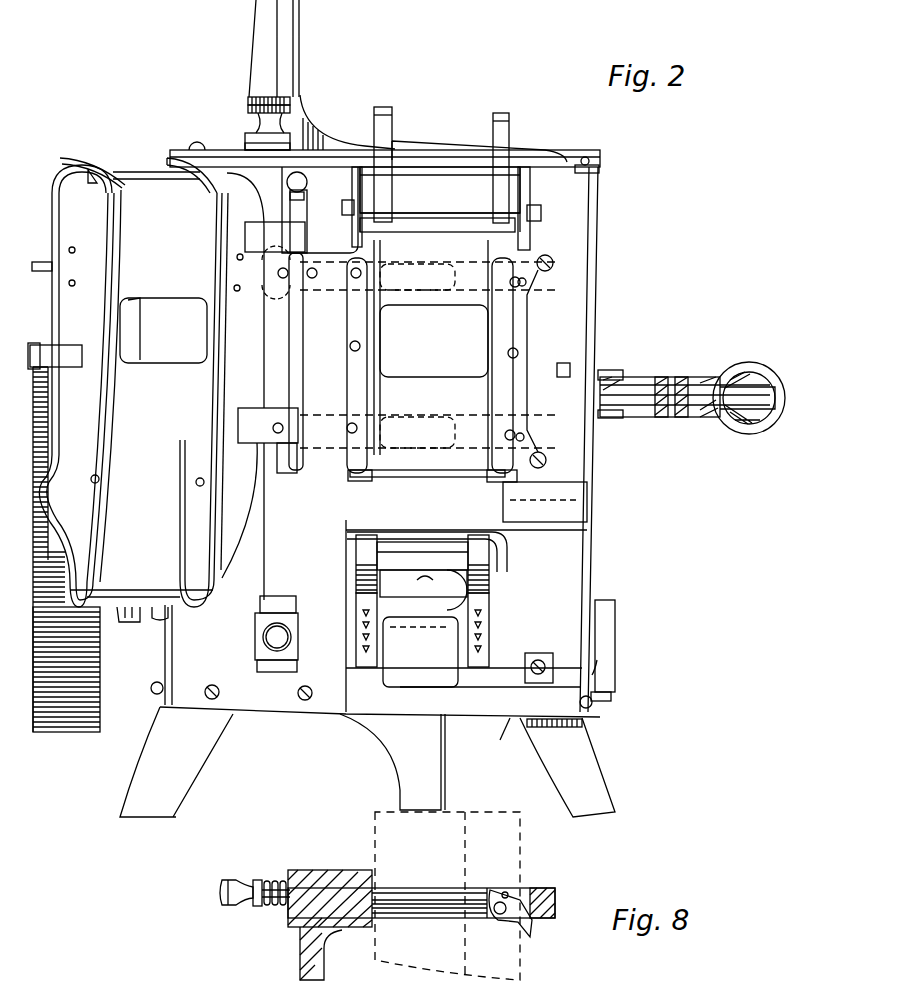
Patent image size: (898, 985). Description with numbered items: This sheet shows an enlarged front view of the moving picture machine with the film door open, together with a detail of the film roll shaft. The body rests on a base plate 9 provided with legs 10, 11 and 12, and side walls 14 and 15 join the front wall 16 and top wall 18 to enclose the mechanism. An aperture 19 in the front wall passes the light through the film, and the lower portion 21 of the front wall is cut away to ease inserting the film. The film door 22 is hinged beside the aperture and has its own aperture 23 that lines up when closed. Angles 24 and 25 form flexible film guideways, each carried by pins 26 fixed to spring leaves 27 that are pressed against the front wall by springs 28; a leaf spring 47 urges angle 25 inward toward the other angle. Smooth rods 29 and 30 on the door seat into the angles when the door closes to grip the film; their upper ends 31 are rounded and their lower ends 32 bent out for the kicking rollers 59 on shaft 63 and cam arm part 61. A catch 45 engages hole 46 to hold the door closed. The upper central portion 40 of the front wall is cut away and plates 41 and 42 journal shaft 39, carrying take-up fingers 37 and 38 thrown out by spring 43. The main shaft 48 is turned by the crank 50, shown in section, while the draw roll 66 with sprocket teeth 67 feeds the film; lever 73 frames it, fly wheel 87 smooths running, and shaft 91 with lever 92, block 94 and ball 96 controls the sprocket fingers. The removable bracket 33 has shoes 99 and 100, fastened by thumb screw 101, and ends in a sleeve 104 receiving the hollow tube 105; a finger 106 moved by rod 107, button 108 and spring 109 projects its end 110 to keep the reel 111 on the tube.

In FIG. 2, the base plate 9 is at (470, 718).
In FIG. 2, the leg 10 is at (200, 790).
In FIG. 2, the leg 11 is at (395, 770).
In FIG. 2, the leg 12 is at (598, 750).
In FIG. 2, the side wall 14 is at (165, 655).
In FIG. 2, the side wall 15 is at (595, 545).
In FIG. 2, the front wall 16 is at (252, 526).
In FIG. 2, the top wall 18 is at (445, 150).
In FIG. 2, the aperture 19 is at (570, 365).
In FIG. 2, the lower portion of the front wall 21 is at (595, 505).
In FIG. 2, the film door 22 is at (138, 200).
In FIG. 2, the aperture 23 is at (160, 355).
In FIG. 2, the angle 24 is at (380, 300).
In FIG. 2, the angle 25 is at (490, 398).
In FIG. 2, the pins 26 is at (528, 284).
In FIG. 2, the spring leaves 27 is at (470, 270).
In FIG. 2, the springs 28 is at (318, 248).
In FIG. 2, the rod 29 is at (213, 443).
In FIG. 2, the rod 30 is at (113, 445).
In FIG. 2, the upper ends of the rods 31 is at (68, 160).
In FIG. 2, the lower ends of the rods 32 is at (190, 562).
In FIG. 2, the bracket 33 is at (292, 47).
In FIG. 2, the finger 37 is at (394, 157).
In FIG. 2, the finger 38 is at (517, 154).
In FIG. 2, the shaft 39 is at (440, 199).
In FIG. 2, the upper central portion of the front wall 40 is at (462, 178).
In FIG. 2, the plate 41 is at (351, 182).
In FIG. 2, the plate 42 is at (530, 190).
In FIG. 2, the spring 43 is at (541, 214).
In FIG. 2, the catch 45 is at (75, 368).
In FIG. 2, the hole 46 is at (650, 375).
In FIG. 2, the leaf spring 47 is at (533, 300).
In FIG. 2, the main shaft 48 is at (678, 375).
In FIG. 2, the crank 50 is at (746, 372).
In FIG. 2, the rollers 59 is at (395, 548).
In FIG. 2, the part of the cam arm 61 is at (420, 532).
In FIG. 2, the shaft 63 is at (495, 612).
In FIG. 2, the film draw roll 66 is at (470, 600).
In FIG. 2, the sprocket teeth 67 is at (492, 640).
In FIG. 2, the lever 73 is at (255, 658).
In FIG. 2, the fly wheel 87 is at (70, 735).
In FIG. 2, the shaft 91 is at (500, 738).
In FIG. 2, the lever 92 is at (615, 627).
In FIG. 2, the block 94 is at (615, 655).
In FIG. 2, the steel ball 96 is at (525, 705).
In FIG. 2, the shoe 99 is at (246, 145).
In FIG. 2, the shoe 100 is at (415, 150).
In FIG. 2, the thumb screw 101 is at (247, 100).
In FIG. 8, the sleeve 104 is at (345, 870).
In FIG. 8, the hollow tube 105 is at (455, 888).
In FIG. 8, the finger 106 is at (560, 900).
In FIG. 8, the rod 107 is at (440, 918).
In FIG. 8, the button 108 is at (220, 886).
In FIG. 8, the spring 109 is at (268, 908).
In FIG. 8, the end of the finger 110 is at (540, 930).
In FIG. 8, the reel 111 is at (520, 968).